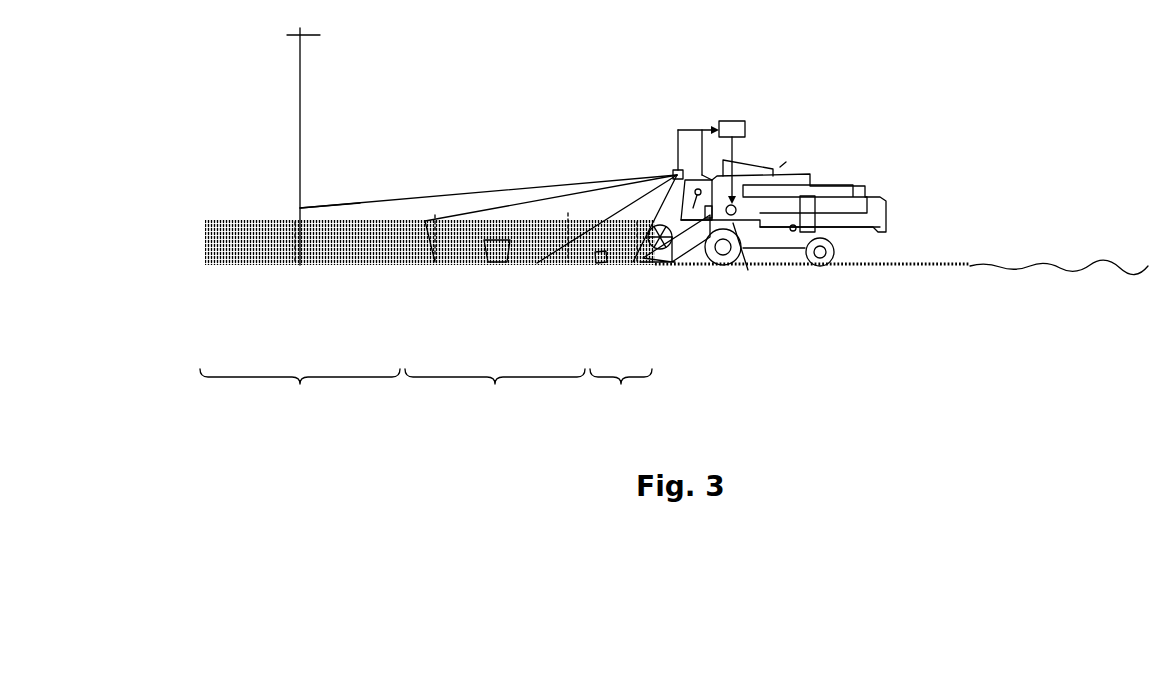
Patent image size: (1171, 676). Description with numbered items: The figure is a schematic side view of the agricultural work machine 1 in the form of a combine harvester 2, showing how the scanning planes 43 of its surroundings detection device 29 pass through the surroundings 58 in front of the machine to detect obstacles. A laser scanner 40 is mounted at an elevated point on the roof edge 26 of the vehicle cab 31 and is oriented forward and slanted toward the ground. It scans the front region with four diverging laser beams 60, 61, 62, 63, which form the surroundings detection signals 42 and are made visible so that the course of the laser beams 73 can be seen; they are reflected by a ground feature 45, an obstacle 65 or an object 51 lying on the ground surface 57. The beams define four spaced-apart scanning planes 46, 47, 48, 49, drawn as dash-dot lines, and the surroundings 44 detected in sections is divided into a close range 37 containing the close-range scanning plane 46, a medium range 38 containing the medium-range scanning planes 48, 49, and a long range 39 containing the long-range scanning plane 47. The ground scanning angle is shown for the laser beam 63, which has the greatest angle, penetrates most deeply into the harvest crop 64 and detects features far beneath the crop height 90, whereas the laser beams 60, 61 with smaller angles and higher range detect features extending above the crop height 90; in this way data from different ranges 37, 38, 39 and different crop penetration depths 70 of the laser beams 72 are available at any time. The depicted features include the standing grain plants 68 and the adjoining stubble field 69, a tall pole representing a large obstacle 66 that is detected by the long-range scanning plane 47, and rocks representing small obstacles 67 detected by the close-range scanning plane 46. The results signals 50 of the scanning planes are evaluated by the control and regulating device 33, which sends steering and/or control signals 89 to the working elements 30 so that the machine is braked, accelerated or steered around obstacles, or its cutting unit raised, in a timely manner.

The agricultural work machine 1 is at (763, 179).
The combine harvester 2 is at (806, 160).
The roof edge of the cab 26 is at (683, 170).
The surroundings detection device 29 is at (670, 95).
The working elements 30 is at (748, 270).
The vehicle cab 31 is at (704, 174).
The control and regulating device 33 is at (742, 121).
The close range 37 is at (621, 390).
The medium range 38 is at (495, 390).
The long range 39 is at (300, 390).
The laser scanner 40 is at (670, 95).
The surroundings detection signals 42 is at (488, 168).
The scanning planes 43 is at (488, 271).
The surroundings detected in sections 44 is at (428, 240).
The ground feature 45 is at (668, 208).
The close-range scanning plane 46 is at (637, 265).
The long-range scanning plane 47 is at (292, 268).
The medium-range scanning plane 48 is at (437, 265).
The medium-range scanning plane 49 is at (573, 265).
The results signals 50 is at (690, 128).
The object 51 is at (511, 194).
The ground surface 57 is at (1060, 266).
The surroundings 58 is at (537, 98).
The laser beam 60 is at (428, 197).
The laser beam 61 is at (492, 214).
The laser beam 62 is at (612, 214).
The laser beam 63 is at (672, 170).
The harvest crop 64 is at (421, 206).
The obstacle 65 is at (511, 194).
The large obstacle 66 is at (303, 80).
The small obstacle 67 is at (497, 262).
The grain plants 68 is at (262, 240).
The stubble field 69 is at (917, 263).
The crop penetration depth 70 is at (463, 207).
The laser beams 72 is at (675, 168).
The laser beams 73 is at (488, 168).
The steering and/or control signals 89 is at (738, 152).
The crop height 90 is at (356, 207).